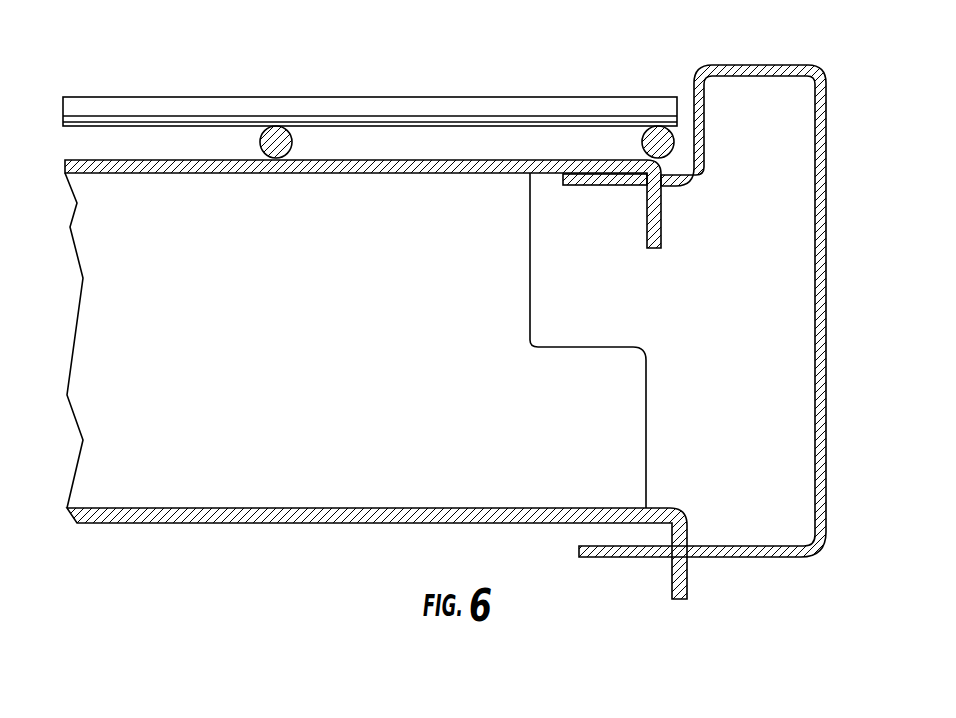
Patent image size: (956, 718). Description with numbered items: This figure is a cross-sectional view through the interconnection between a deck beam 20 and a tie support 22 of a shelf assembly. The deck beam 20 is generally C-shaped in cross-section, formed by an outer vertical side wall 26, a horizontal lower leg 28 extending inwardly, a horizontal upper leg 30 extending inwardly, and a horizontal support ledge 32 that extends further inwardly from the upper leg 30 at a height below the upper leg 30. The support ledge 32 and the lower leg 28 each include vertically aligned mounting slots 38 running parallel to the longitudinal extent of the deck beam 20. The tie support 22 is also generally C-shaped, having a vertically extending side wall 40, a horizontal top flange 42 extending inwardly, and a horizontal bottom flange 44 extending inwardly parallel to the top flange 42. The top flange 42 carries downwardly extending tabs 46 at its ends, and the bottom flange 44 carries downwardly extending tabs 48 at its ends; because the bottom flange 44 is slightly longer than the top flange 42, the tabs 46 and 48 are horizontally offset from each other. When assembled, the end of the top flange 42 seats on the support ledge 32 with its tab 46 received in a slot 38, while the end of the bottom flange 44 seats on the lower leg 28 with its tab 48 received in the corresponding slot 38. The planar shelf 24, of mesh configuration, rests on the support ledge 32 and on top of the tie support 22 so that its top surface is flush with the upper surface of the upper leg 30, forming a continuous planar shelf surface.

The deck beam 20 is at (730, 319).
The tie support 22 is at (135, 398).
The planar shelf 24 is at (281, 118).
The outer vertical side wall 26 is at (826, 295).
The horizontal lower leg 28 is at (755, 557).
The horizontal upper leg 30 is at (735, 70).
The horizontal support ledge 32 is at (590, 163).
The mounting slot 38 is at (664, 187).
The vertically extending side wall 40 is at (157, 295).
The horizontal top flange 42 is at (115, 165).
The horizontal bottom flange 44 is at (280, 522).
The tab 46 is at (662, 243).
The tab 48 is at (683, 575).